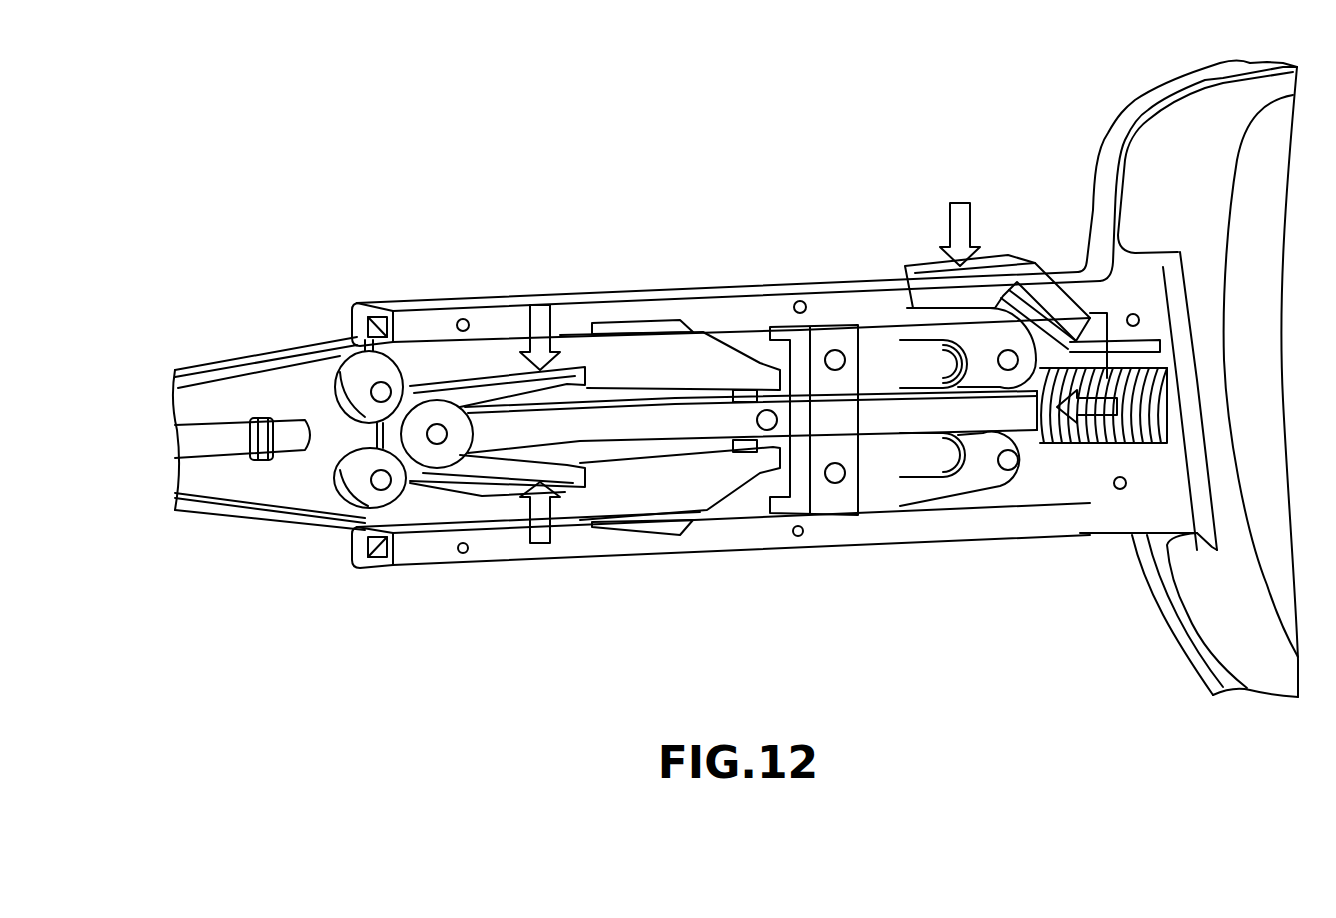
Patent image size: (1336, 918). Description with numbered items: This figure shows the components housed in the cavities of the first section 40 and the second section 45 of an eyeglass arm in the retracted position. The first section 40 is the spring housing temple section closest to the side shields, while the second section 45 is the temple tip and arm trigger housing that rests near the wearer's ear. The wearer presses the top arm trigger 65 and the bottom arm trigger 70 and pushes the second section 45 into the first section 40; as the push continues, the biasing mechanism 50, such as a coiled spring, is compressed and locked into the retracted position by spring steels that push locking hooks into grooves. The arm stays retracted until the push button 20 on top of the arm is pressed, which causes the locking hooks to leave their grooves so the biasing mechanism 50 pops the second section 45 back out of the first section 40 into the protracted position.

The button 20 is at (925, 265).
The first section 40 is at (845, 548).
The second section 45 is at (317, 496).
The biasing mechanism 50 is at (1095, 445).
The top arm trigger 65 is at (562, 372).
The bottom arm trigger 70 is at (571, 482).